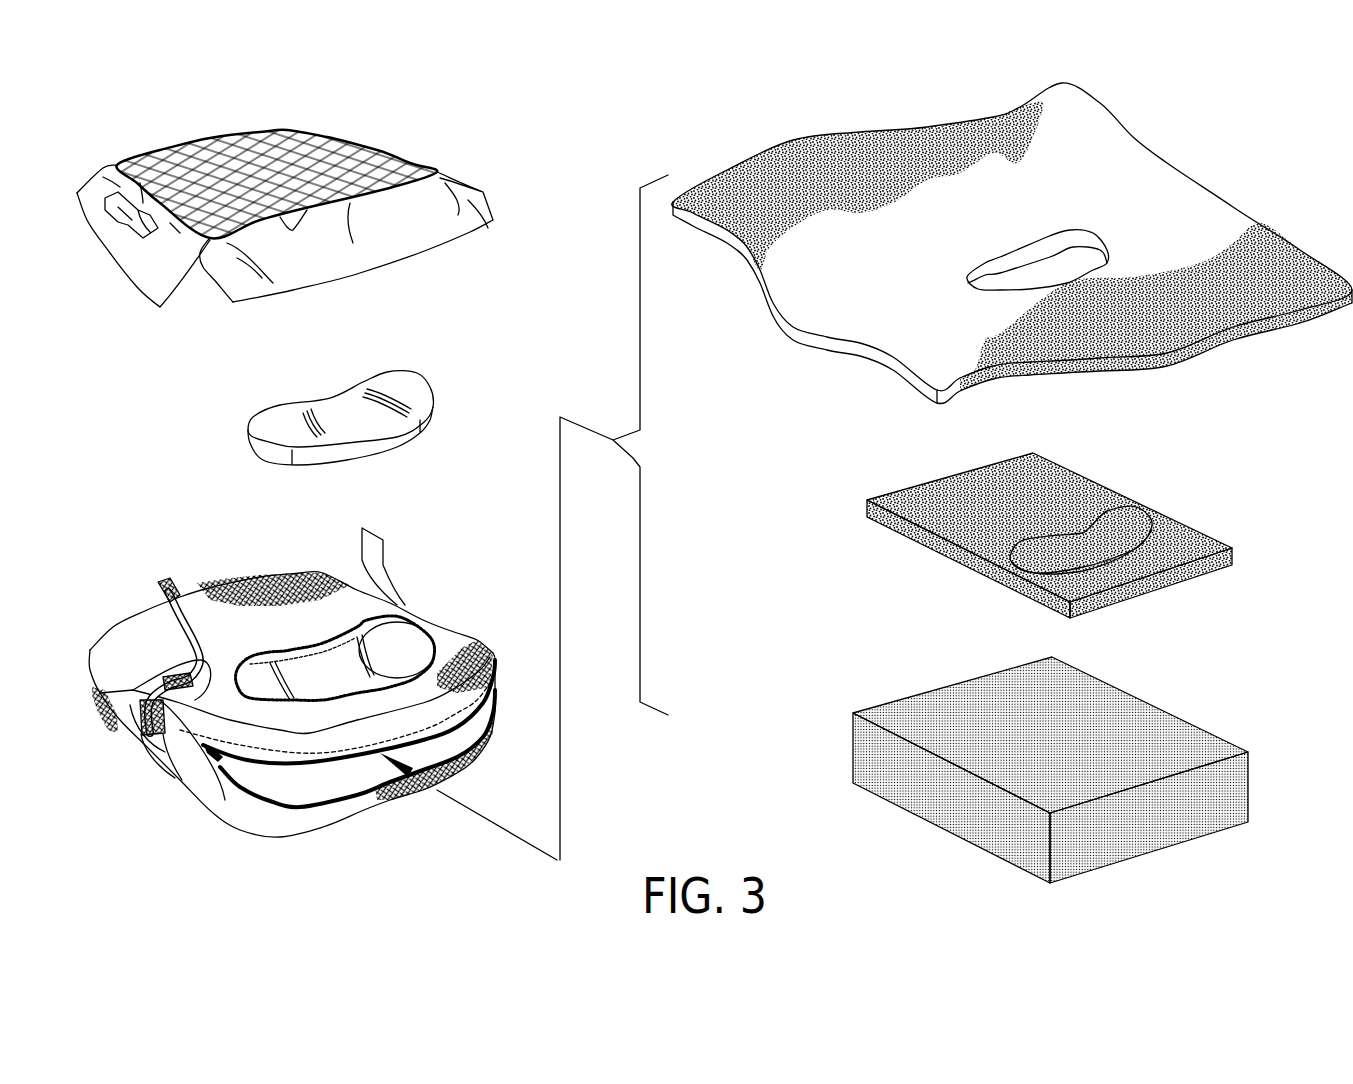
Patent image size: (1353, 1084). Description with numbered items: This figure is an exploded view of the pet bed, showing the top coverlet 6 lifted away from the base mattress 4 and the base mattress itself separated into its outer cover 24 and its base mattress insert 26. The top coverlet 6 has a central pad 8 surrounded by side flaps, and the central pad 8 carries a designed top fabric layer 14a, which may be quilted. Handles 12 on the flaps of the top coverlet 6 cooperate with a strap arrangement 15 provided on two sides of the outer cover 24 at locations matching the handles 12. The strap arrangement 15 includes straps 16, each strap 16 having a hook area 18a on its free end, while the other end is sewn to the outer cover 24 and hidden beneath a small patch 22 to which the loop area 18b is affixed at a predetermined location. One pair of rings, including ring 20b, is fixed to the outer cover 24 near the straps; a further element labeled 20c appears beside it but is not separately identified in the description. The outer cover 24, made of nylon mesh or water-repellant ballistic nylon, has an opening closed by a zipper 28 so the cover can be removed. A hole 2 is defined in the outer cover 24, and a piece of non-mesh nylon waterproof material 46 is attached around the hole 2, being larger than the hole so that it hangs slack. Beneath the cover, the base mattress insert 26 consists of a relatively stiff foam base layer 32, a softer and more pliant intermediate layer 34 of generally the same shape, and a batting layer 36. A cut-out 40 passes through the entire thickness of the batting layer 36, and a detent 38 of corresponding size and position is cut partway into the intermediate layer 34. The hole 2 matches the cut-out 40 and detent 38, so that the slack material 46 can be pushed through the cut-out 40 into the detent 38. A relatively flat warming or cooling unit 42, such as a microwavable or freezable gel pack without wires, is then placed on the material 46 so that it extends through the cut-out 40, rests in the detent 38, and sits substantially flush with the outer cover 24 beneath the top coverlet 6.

The hole 2 is at (310, 710).
The base mattress 4 is at (291, 716).
The top coverlet 6 is at (315, 182).
The central pad 8 is at (433, 172).
The handles 12 is at (123, 223).
The top fabric layer 14a is at (303, 137).
The strap arrangement 15 is at (162, 580).
The straps 16 is at (383, 555).
The hook area 18a is at (176, 582).
The loop area 18b is at (152, 728).
The rings 20b is at (170, 703).
The strap segment 20c is at (167, 670).
The patch 22 is at (153, 737).
The outer cover 24 is at (305, 818).
The base mattress insert 26 is at (350, 767).
The zipper 28 is at (207, 752).
The base layer 32 is at (1183, 735).
The intermediate layer 34 is at (1066, 517).
The batting layer 36 is at (1012, 243).
The detent 38 is at (1140, 507).
The cut-out 40 is at (1107, 257).
The warming or cooling unit 42 is at (417, 373).
The waterproof material 46 is at (410, 657).